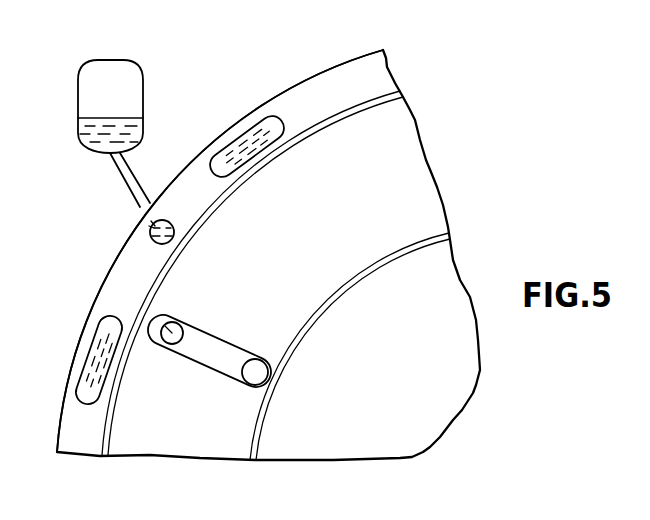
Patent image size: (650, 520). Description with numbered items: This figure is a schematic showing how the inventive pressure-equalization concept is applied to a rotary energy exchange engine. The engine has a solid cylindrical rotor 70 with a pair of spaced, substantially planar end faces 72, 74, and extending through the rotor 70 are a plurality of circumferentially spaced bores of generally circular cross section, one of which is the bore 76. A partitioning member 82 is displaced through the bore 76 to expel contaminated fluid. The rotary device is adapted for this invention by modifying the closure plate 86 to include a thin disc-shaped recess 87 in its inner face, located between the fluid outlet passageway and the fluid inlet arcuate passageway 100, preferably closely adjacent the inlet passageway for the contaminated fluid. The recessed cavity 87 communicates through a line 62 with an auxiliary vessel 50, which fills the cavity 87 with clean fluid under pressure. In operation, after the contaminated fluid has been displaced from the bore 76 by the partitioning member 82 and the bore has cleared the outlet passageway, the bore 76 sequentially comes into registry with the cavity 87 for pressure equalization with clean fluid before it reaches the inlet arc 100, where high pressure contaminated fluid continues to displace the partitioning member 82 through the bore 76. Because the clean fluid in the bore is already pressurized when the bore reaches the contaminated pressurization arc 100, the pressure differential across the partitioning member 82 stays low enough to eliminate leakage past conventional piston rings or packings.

The auxiliary vessel 50 is at (145, 82).
The line 62 is at (120, 177).
The rotor 70 is at (393, 177).
The end face 72 is at (220, 202).
The end face 74 is at (410, 242).
The bore 76 is at (207, 367).
The partitioning member 82 is at (165, 330).
The closure plate 86 is at (308, 77).
The recess 87 is at (150, 236).
The fluid inlet arcuate passageway 100 is at (258, 120).